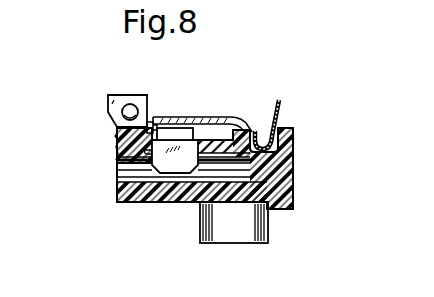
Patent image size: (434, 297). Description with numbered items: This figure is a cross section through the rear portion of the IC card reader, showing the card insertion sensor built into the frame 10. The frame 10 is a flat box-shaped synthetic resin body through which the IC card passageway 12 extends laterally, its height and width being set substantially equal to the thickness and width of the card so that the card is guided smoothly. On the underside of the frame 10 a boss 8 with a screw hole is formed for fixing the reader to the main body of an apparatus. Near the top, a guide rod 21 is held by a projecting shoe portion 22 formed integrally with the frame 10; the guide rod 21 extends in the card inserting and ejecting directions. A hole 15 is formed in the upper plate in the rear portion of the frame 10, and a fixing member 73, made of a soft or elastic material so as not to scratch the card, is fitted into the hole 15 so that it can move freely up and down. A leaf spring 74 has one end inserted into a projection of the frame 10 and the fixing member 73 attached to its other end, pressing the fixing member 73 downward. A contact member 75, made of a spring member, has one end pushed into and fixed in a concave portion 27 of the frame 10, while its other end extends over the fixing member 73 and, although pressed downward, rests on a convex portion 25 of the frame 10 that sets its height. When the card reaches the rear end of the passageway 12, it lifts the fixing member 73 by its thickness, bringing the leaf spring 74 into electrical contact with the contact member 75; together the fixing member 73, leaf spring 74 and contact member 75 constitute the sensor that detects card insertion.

The boss 8 is at (268, 243).
The frame 10 is at (285, 172).
The IC card passageway 12 is at (193, 200).
The hole 15 is at (118, 148).
The guide rod 21 is at (133, 105).
The shoe portion 22 is at (107, 102).
The convex portion 25 is at (150, 122).
The concave portion 27 is at (282, 130).
The fixing member 73 is at (162, 175).
The leaf spring 74 is at (170, 128).
The contact member 75 is at (227, 117).